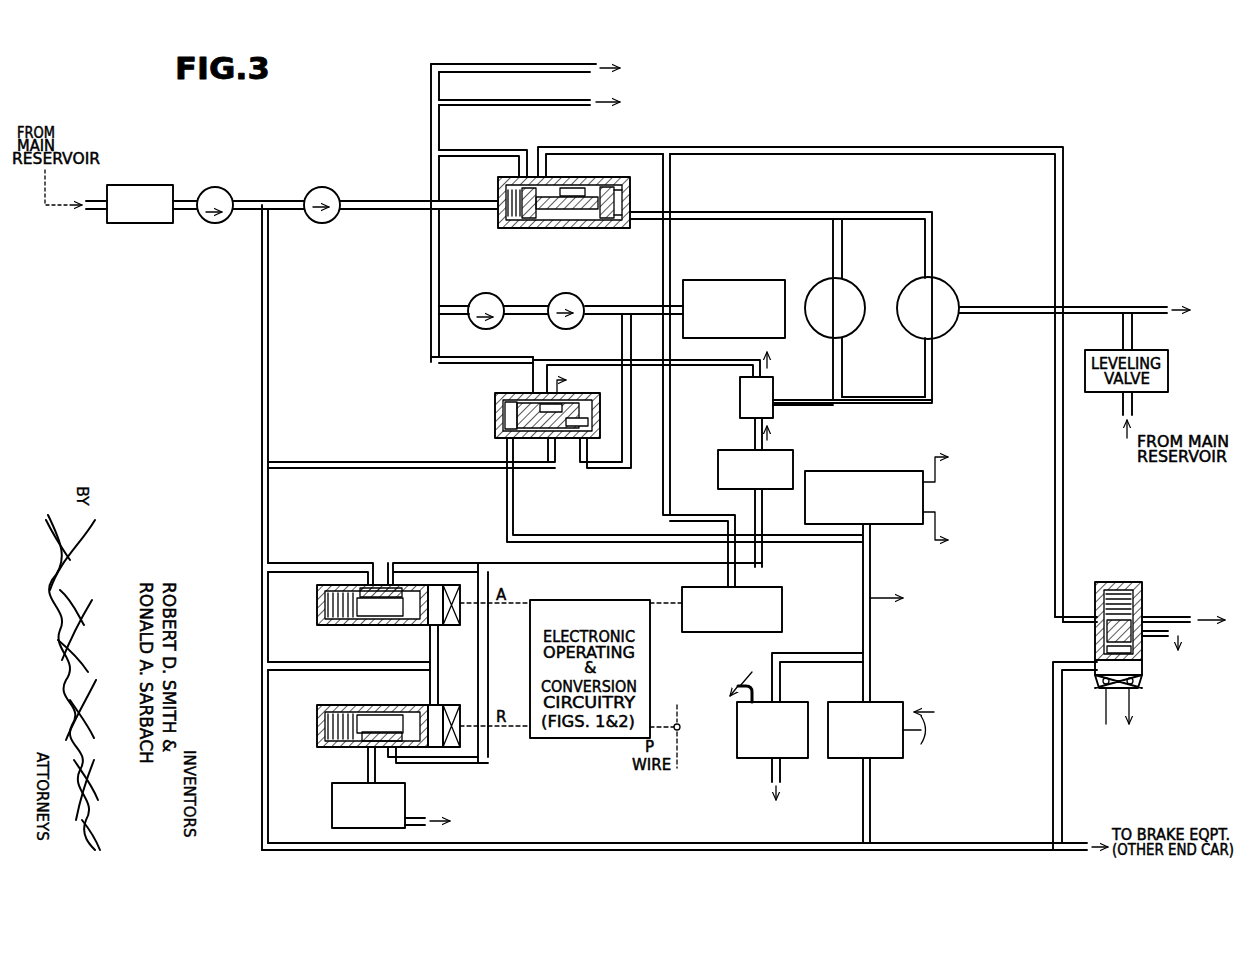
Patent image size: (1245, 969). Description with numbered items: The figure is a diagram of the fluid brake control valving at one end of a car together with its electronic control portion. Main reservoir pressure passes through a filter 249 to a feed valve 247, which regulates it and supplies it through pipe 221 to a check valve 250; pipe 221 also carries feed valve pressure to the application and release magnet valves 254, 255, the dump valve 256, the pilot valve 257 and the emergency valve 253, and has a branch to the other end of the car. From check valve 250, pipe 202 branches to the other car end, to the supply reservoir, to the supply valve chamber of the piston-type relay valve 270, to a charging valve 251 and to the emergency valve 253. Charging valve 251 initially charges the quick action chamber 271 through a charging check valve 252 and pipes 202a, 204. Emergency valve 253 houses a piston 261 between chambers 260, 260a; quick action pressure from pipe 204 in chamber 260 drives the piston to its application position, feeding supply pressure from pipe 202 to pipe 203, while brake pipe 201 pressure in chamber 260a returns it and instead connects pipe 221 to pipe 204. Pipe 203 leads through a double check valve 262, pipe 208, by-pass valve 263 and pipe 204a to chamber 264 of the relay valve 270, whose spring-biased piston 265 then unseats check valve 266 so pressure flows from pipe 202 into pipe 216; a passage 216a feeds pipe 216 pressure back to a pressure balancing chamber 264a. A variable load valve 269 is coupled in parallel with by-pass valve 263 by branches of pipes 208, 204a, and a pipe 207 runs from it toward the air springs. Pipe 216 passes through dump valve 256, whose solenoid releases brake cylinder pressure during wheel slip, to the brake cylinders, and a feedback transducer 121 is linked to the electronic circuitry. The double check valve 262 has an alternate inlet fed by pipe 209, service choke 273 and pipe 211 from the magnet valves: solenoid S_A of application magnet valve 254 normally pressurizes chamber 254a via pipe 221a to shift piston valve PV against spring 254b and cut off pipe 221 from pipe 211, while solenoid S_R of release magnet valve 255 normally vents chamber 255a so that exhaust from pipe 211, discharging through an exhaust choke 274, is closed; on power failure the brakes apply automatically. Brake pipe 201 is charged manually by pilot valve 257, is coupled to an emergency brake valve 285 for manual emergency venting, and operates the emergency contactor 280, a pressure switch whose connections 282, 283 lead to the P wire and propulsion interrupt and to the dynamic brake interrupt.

The feedback transducer 121 is at (784, 605).
The brake pipe 201 is at (506, 499).
The pipe 202 is at (540, 72).
The pipe 202a is at (522, 306).
The pipe 203 is at (558, 356).
The quick action chamber pipe 204 is at (617, 344).
The pipe 204a is at (684, 213).
The air spring pipe 207 is at (1090, 307).
The pipe 208 is at (780, 394).
The pipe 209 is at (742, 410).
The pipe 211 is at (448, 564).
The pipe 216 is at (642, 150).
The passage 216a is at (562, 228).
The feed valve pipe 221 is at (266, 199).
The pipe 221a is at (276, 670).
The feed valve 247 is at (210, 187).
The filter 249 is at (136, 186).
The check valve 250 is at (338, 214).
The charging valve 251 is at (478, 300).
The charging check valve 252 is at (578, 302).
The emergency valve 253 is at (552, 406).
The application magnet valve 254 is at (371, 639).
The chamber 254a is at (420, 626).
The spring 254b is at (346, 626).
The release magnet valve 255 is at (381, 725).
The chamber 255a is at (424, 705).
The dump valve 256 is at (1110, 582).
The pilot valve 257 is at (846, 702).
The chamber 260 is at (598, 428).
The chamber 260a is at (502, 424).
The piston 261 is at (595, 411).
The double check valve 262 is at (774, 414).
The by-pass valve 263 is at (846, 285).
The chamber 264 is at (584, 209).
The pressure balancing chamber 264a is at (606, 184).
The piston 265 is at (618, 228).
The check valve 266 is at (521, 226).
The variable load valve 269 is at (962, 292).
The relay valve 270 is at (499, 210).
The quick action chamber 271 is at (753, 280).
The service choke 273 is at (718, 470).
The exhaust choke 274 is at (332, 802).
The emergency contactor 280 is at (825, 471).
The contact 282 is at (924, 478).
The contact 283 is at (934, 530).
The emergency brake valve 285 is at (737, 742).